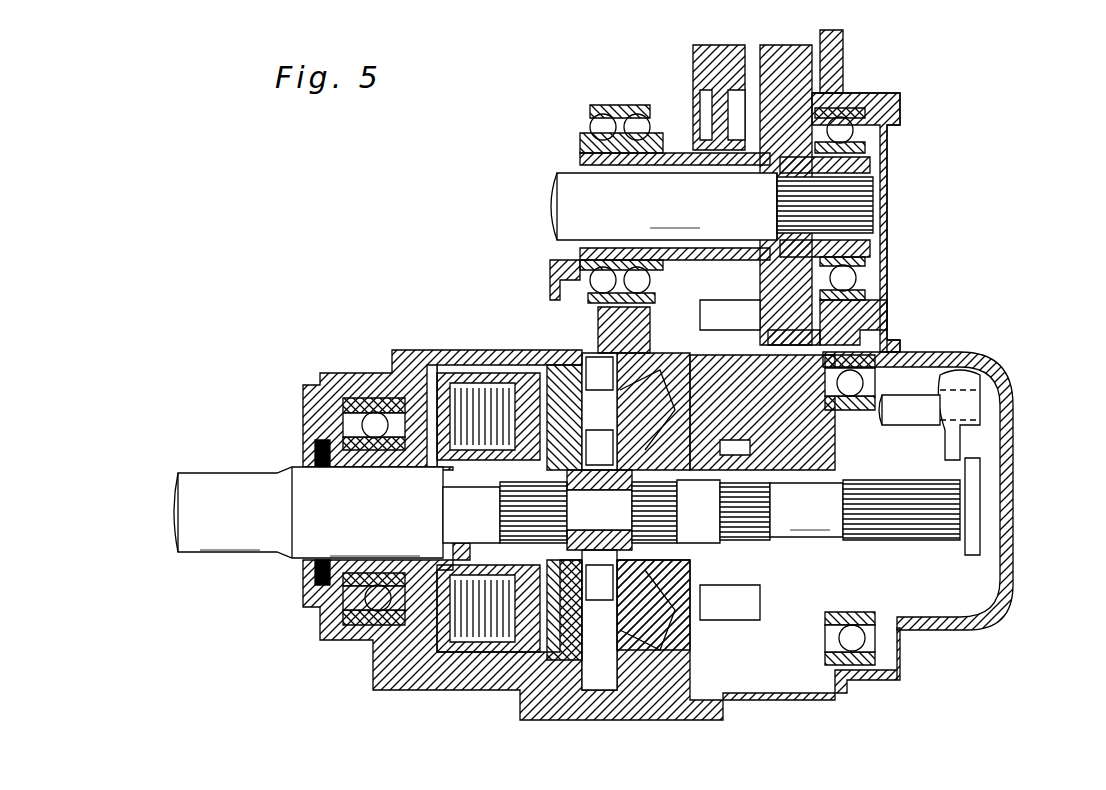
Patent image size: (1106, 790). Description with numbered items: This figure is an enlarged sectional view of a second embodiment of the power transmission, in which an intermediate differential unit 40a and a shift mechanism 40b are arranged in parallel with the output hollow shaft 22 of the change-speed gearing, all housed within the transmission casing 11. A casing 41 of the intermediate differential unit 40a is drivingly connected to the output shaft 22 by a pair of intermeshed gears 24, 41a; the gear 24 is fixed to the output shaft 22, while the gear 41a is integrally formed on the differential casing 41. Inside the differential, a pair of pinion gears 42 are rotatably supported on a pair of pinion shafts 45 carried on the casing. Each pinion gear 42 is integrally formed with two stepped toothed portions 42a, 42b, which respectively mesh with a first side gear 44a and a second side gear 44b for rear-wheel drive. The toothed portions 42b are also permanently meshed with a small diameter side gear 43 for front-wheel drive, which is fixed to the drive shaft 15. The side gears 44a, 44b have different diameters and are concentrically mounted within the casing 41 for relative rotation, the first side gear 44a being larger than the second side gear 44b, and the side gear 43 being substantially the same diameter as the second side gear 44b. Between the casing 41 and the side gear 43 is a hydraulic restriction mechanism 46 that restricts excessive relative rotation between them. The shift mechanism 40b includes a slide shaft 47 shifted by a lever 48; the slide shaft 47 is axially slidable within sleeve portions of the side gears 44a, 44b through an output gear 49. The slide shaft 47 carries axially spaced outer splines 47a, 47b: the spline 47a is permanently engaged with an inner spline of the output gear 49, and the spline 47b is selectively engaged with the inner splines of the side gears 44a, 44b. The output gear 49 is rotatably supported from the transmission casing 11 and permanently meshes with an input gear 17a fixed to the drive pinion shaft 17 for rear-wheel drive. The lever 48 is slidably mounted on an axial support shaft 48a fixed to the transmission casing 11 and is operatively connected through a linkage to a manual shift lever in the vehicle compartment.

The transmission casing 11 is at (960, 352).
The drive shaft 15 is at (215, 475).
The drive pinion shaft 17 is at (865, 210).
The input gear 17a is at (858, 332).
The output hollow shaft 22 is at (580, 150).
The gear 24 is at (693, 78).
The intermediate differential unit 40a is at (493, 348).
The shift mechanism 40b is at (948, 568).
The casing 41 is at (497, 352).
The gear 41a is at (722, 353).
The pinion gear 42 is at (625, 385).
The toothed portion 42a is at (599, 376).
The toothed portion 42b is at (599, 447).
The side gear 43 is at (581, 510).
The first side gear 44a is at (618, 620).
The second side gear 44b is at (599, 582).
The pinion shaft 45 is at (590, 352).
The hydraulic restriction mechanism 46 is at (440, 350).
The slide shaft 47 is at (980, 510).
The outer spline 47a is at (905, 530).
The outer spline 47b is at (770, 512).
The lever 48 is at (985, 440).
The axial support shaft 48a is at (908, 415).
The output gear 49 is at (800, 660).